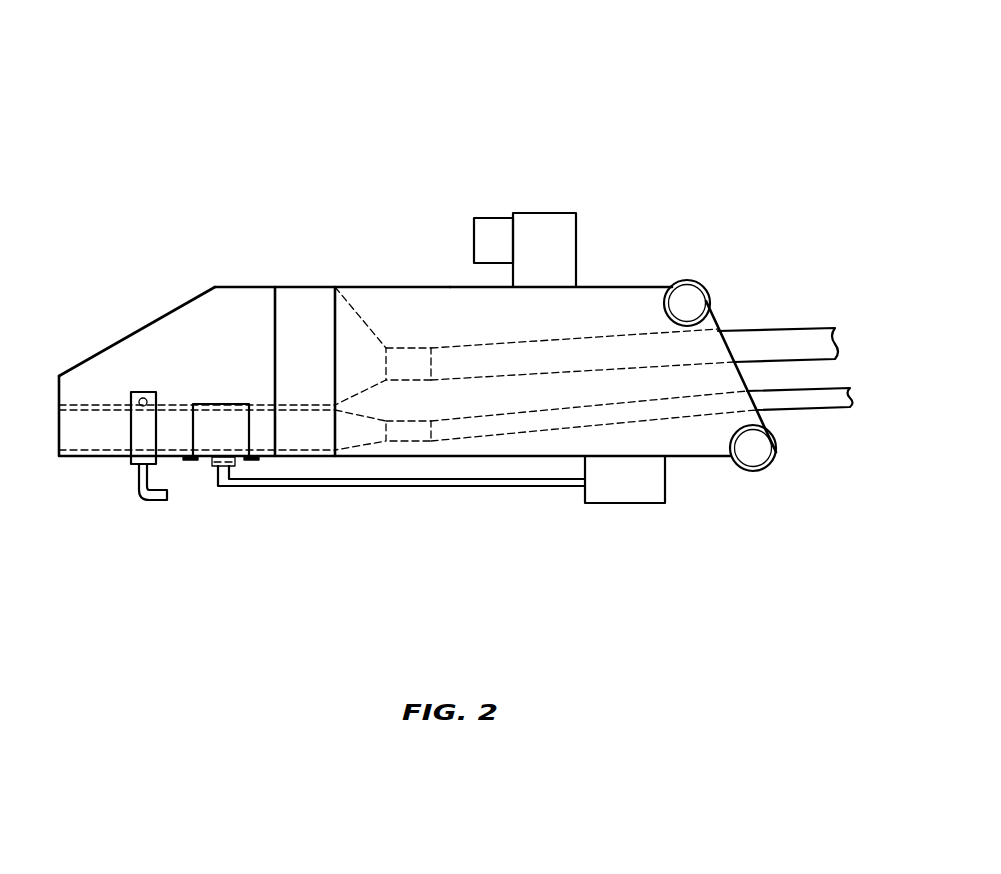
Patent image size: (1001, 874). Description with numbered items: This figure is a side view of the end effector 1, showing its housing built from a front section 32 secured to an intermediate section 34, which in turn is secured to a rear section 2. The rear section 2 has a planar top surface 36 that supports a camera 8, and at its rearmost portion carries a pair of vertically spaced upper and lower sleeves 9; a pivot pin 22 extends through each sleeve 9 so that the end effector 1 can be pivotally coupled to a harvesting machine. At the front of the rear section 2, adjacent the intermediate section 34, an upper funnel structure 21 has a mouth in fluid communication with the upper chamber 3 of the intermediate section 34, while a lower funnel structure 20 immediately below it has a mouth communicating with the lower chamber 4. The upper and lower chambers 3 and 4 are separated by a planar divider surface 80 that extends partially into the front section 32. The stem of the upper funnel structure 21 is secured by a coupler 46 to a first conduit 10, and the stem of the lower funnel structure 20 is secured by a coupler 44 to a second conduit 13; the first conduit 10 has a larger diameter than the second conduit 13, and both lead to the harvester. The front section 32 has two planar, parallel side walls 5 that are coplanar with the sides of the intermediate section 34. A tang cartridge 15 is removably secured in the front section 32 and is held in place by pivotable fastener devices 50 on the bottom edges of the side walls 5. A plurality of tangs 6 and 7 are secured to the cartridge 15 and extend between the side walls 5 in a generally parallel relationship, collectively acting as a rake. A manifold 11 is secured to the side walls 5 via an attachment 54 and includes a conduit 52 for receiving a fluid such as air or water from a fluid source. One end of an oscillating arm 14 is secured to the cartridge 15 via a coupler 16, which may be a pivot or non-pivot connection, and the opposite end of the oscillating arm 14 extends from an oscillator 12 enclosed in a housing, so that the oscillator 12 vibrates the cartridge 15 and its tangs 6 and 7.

The end effector 1 is at (190, 127).
The rear section 2 is at (375, 277).
The upper chamber 3 is at (307, 308).
The lower chamber 4 is at (307, 447).
The side wall 5 is at (180, 345).
The tang 6 is at (93, 405).
The tang 7 is at (75, 443).
The camera 8 is at (495, 213).
The sleeve 9 is at (704, 282).
The first conduit 10 is at (770, 355).
The manifold 11 is at (128, 462).
The oscillator 12 is at (628, 487).
The second conduit 13 is at (822, 405).
The oscillating arm 14 is at (487, 488).
The tang cartridge 15 is at (221, 404).
The coupler 16 is at (212, 470).
The lower funnel structure 20 is at (361, 432).
The upper funnel structure 21 is at (374, 352).
The pivot pin 22 is at (677, 283).
The front section 32 is at (177, 296).
The intermediate section 34 is at (291, 287).
The top surface 36 is at (597, 287).
The coupler 44 is at (410, 432).
The coupler 46 is at (410, 365).
The fastener device 50 is at (195, 462).
The conduit 52 is at (147, 493).
The attachment 54 is at (140, 398).
The divider surface 80 is at (262, 405).